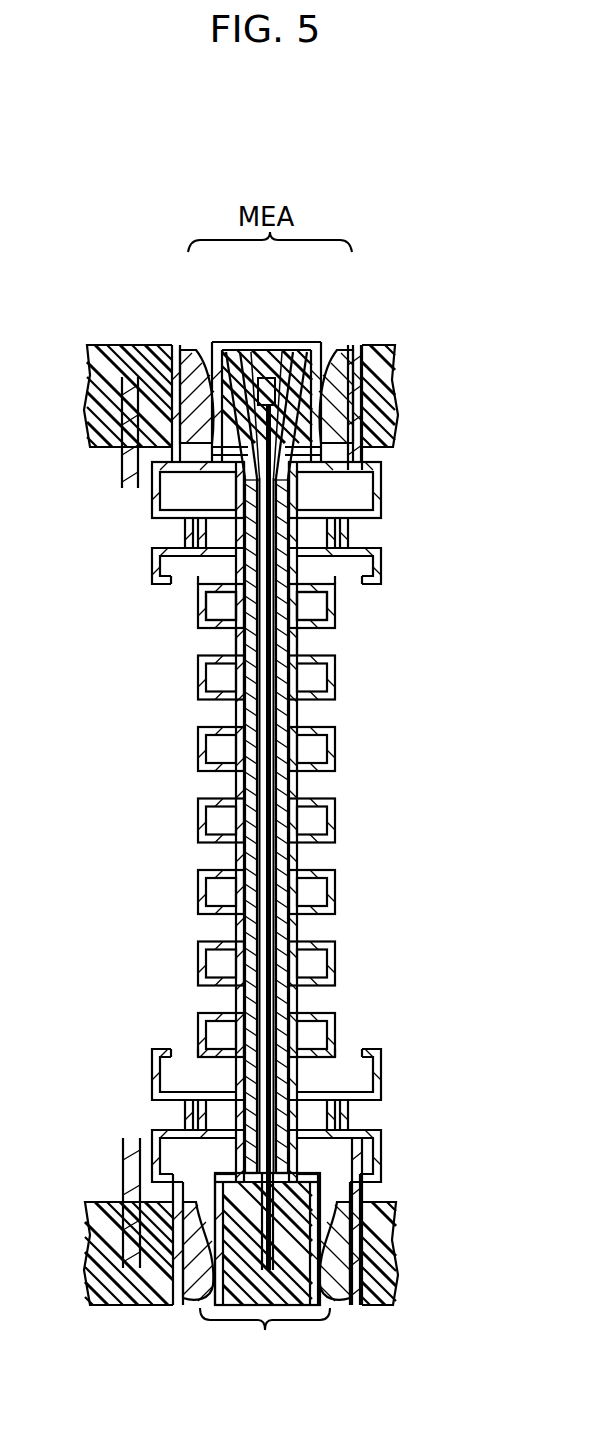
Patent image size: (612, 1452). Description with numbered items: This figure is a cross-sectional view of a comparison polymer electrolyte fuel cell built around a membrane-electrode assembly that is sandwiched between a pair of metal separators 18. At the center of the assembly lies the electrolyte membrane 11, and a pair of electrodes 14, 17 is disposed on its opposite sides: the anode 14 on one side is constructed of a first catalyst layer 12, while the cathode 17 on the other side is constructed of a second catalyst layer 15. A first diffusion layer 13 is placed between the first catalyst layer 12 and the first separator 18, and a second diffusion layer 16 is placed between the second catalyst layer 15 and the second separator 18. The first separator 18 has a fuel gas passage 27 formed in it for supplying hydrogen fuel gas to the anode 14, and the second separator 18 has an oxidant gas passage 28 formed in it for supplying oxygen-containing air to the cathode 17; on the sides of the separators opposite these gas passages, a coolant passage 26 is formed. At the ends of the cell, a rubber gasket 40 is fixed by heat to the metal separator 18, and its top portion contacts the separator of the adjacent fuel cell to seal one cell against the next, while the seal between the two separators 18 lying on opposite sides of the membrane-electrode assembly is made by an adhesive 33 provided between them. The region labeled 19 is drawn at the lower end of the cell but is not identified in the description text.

The electrolyte membrane 11 is at (267, 378).
The first catalyst layer 12 is at (246, 415).
The first diffusion layer 13 is at (218, 400).
The anode 14 is at (220, 368).
The second catalyst layer 15 is at (286, 420).
The second diffusion layer 16 is at (306, 420).
The cathode 17 is at (313, 368).
The separator 18 is at (198, 756).
The end frame portion 19 is at (265, 864).
The coolant passage 26 is at (218, 642).
The fuel gas passage 27 is at (230, 603).
The oxidant gas passage 28 is at (313, 606).
The adhesive 33 is at (322, 445).
The rubber gasket 40 is at (145, 372).